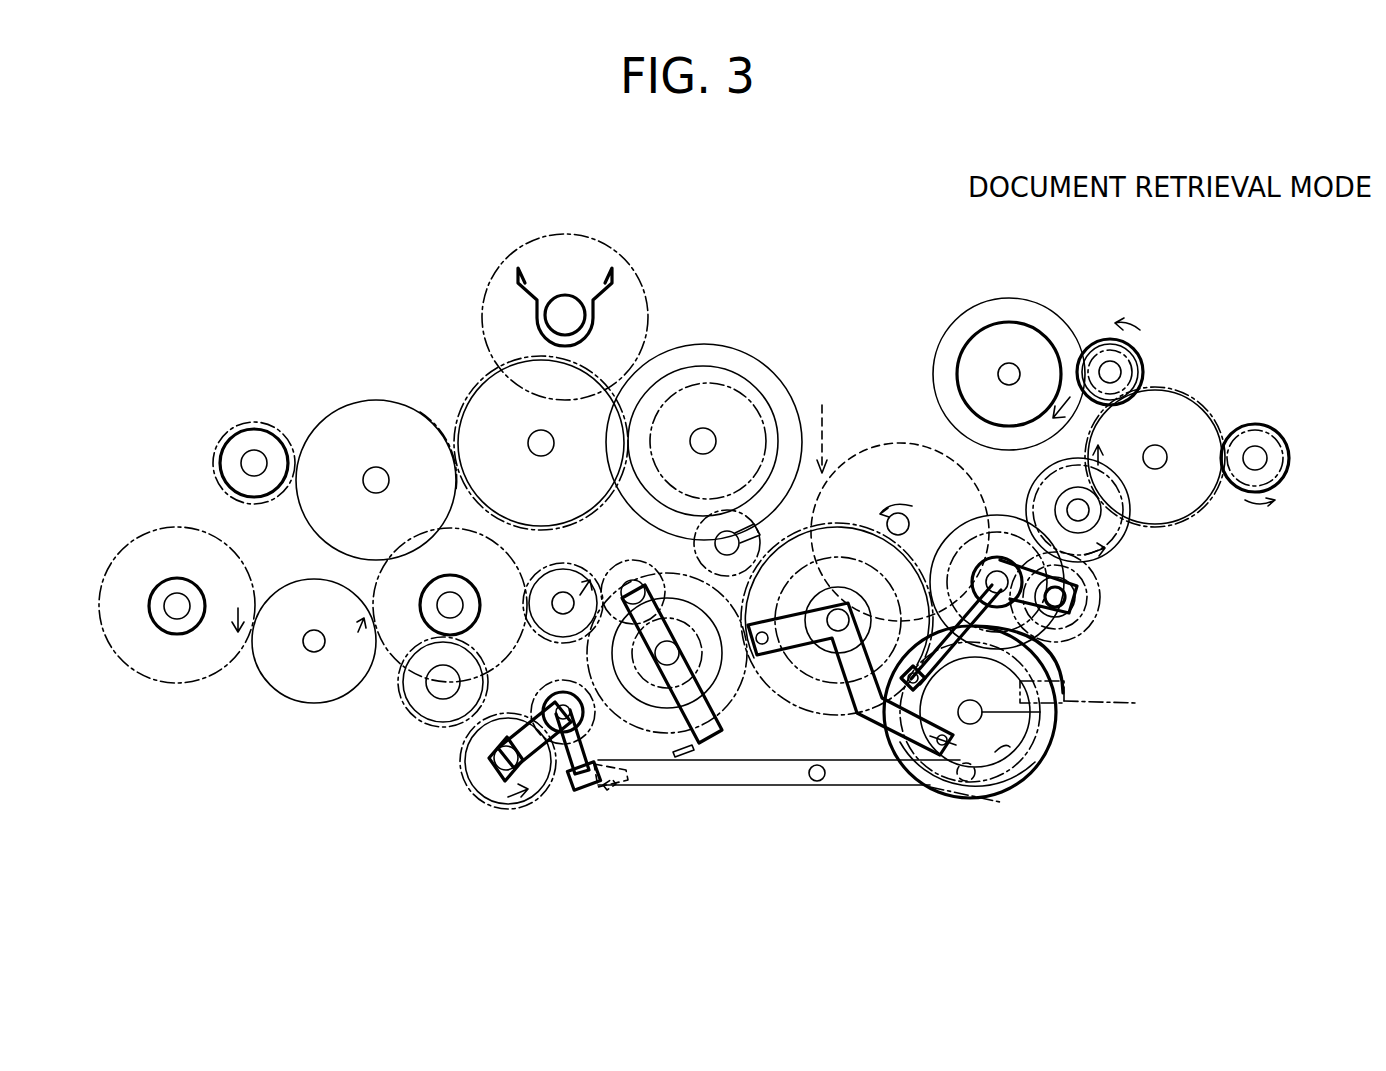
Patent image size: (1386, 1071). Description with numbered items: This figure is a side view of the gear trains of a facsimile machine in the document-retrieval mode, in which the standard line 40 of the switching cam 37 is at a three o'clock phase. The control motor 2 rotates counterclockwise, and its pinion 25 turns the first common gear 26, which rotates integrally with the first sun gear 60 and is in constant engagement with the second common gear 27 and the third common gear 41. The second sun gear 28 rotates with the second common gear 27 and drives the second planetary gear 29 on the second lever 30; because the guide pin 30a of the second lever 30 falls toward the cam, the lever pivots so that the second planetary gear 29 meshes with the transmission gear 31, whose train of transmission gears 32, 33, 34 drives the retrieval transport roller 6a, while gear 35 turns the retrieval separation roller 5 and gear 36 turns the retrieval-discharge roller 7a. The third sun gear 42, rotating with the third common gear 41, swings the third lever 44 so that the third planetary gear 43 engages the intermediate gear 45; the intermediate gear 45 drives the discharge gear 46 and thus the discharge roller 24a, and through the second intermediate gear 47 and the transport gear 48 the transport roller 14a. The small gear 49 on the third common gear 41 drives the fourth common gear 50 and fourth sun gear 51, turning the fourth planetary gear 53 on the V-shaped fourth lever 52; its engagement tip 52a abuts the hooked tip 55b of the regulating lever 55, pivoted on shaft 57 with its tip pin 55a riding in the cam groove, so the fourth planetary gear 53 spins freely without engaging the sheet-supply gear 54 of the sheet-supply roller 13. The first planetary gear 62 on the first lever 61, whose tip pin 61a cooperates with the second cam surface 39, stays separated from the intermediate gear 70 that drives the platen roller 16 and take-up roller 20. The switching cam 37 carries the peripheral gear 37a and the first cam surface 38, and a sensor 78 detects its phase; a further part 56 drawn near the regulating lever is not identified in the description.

The control motor 2 is at (821, 422).
The retrieval separation roller 5 is at (1008, 335).
The retrieval transport roller 6a is at (1143, 378).
The retrieval-discharge roller 7a is at (1290, 470).
The sheet-supply roller 13 is at (440, 722).
The transport roller 14a is at (177, 620).
The platen roller 16 is at (253, 447).
The take-up roller 20 is at (572, 305).
The discharge roller 24a is at (458, 582).
The pinion 25 is at (905, 512).
The first common gear 26 is at (812, 706).
The second common gear 27 is at (935, 455).
The second sun gear 28 is at (1090, 676).
The second planetary gear 29 is at (1072, 600).
The second lever 30 is at (1065, 636).
The guide pin 30a is at (974, 602).
The transmission gear 31 is at (1088, 578).
The transmission gear 32 is at (1125, 528).
The transmission gear 33 is at (1210, 485).
The transmission gear 34 is at (1135, 352).
The gear 35 is at (1045, 330).
The gear 36 is at (1262, 425).
The switching cam 37 is at (1010, 797).
The gear 37a is at (966, 782).
The first cam surface 38 is at (1045, 713).
The second cam surface 39 is at (1012, 752).
The standard line 40 is at (1042, 742).
The third common gear 41 is at (722, 742).
The third sun gear 42 is at (678, 792).
The third planetary gear 43 is at (630, 578).
The third lever 44 is at (728, 760).
The intermediate gear 45 is at (560, 567).
The discharge gear 46 is at (395, 665).
The second intermediate gear 47 is at (300, 700).
The transport gear 48 is at (165, 545).
The small gear 49 is at (748, 705).
The fourth common gear 50 is at (566, 792).
The fourth sun gear 51 is at (560, 700).
The fourth lever 52 is at (470, 790).
The engagement tip 52a is at (612, 784).
The fourth planetary gear 53 is at (528, 804).
The sheet-supply gear 54 is at (443, 727).
The regulating lever 55 is at (882, 786).
The tip pin 55a is at (1000, 797).
The hooked tip 55b is at (580, 792).
The pin 56 is at (616, 792).
The shaft 57 is at (817, 782).
The first sun gear 60 is at (838, 606).
The first lever 61 is at (936, 750).
The tip pin 61a is at (944, 750).
The first planetary gear 62 is at (830, 642).
The intermediate gear 70 is at (803, 525).
The sensor 78 is at (1140, 704).